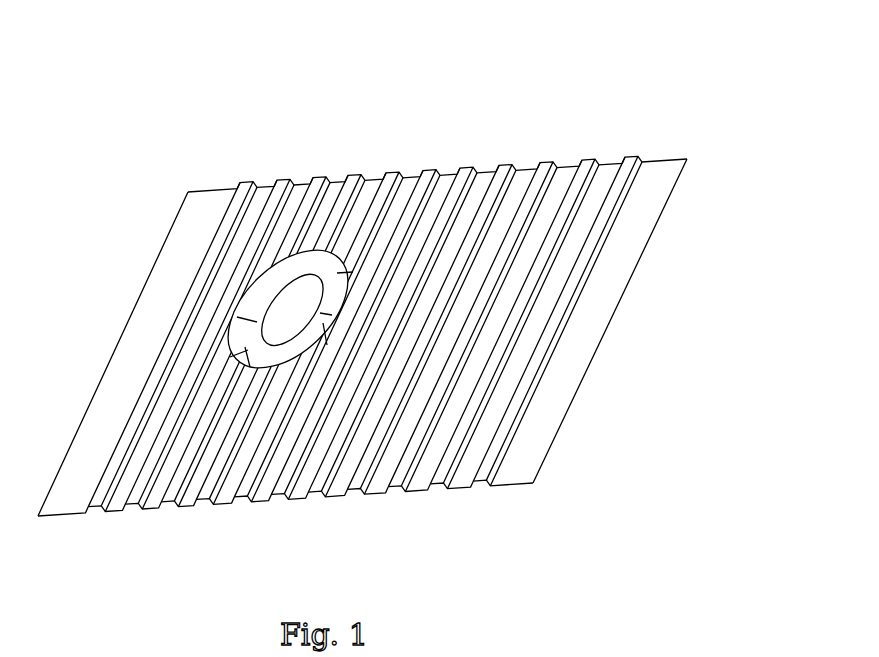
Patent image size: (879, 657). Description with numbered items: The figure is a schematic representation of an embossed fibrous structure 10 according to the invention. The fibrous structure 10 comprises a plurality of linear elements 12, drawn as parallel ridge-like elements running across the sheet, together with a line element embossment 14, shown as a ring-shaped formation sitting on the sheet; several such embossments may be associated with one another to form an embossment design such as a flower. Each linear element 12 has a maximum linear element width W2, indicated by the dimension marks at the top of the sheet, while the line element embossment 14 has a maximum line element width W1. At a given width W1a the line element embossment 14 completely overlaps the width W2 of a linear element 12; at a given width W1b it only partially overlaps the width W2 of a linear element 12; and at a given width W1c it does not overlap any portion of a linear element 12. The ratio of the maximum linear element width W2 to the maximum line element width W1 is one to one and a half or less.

The fibrous structure 10 is at (627, 137).
The linear element 12 is at (163, 505).
The line element embossment 14 is at (299, 270).
The maximum line element width W1 is at (247, 374).
The line element width W1a is at (238, 330).
The line element width W1b is at (280, 457).
The line element width W1c is at (352, 268).
The maximum linear element width W2 is at (326, 177).